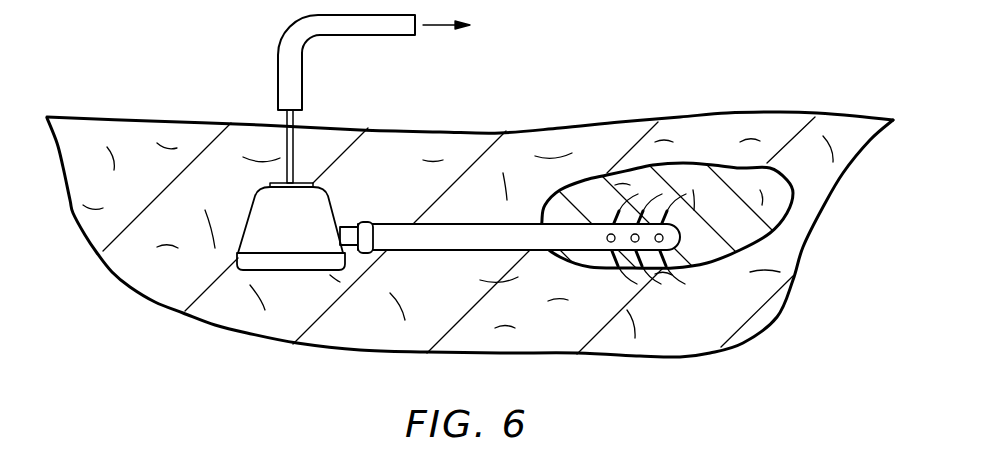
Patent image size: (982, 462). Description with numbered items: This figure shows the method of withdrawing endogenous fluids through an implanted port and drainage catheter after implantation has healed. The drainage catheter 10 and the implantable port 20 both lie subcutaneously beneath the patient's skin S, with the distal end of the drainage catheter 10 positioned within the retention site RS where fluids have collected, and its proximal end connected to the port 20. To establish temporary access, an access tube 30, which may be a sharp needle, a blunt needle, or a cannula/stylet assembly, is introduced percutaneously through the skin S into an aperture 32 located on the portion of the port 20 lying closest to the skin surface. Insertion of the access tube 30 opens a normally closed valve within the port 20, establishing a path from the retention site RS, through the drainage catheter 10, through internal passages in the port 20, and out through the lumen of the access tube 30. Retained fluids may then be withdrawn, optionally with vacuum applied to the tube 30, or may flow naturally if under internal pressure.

The skin S is at (163, 118).
The retention site RS is at (767, 213).
The drainage catheter 10 is at (477, 223).
The implantable port 20 is at (301, 238).
The access tube 30 is at (290, 138).
The aperture 32 is at (305, 183).